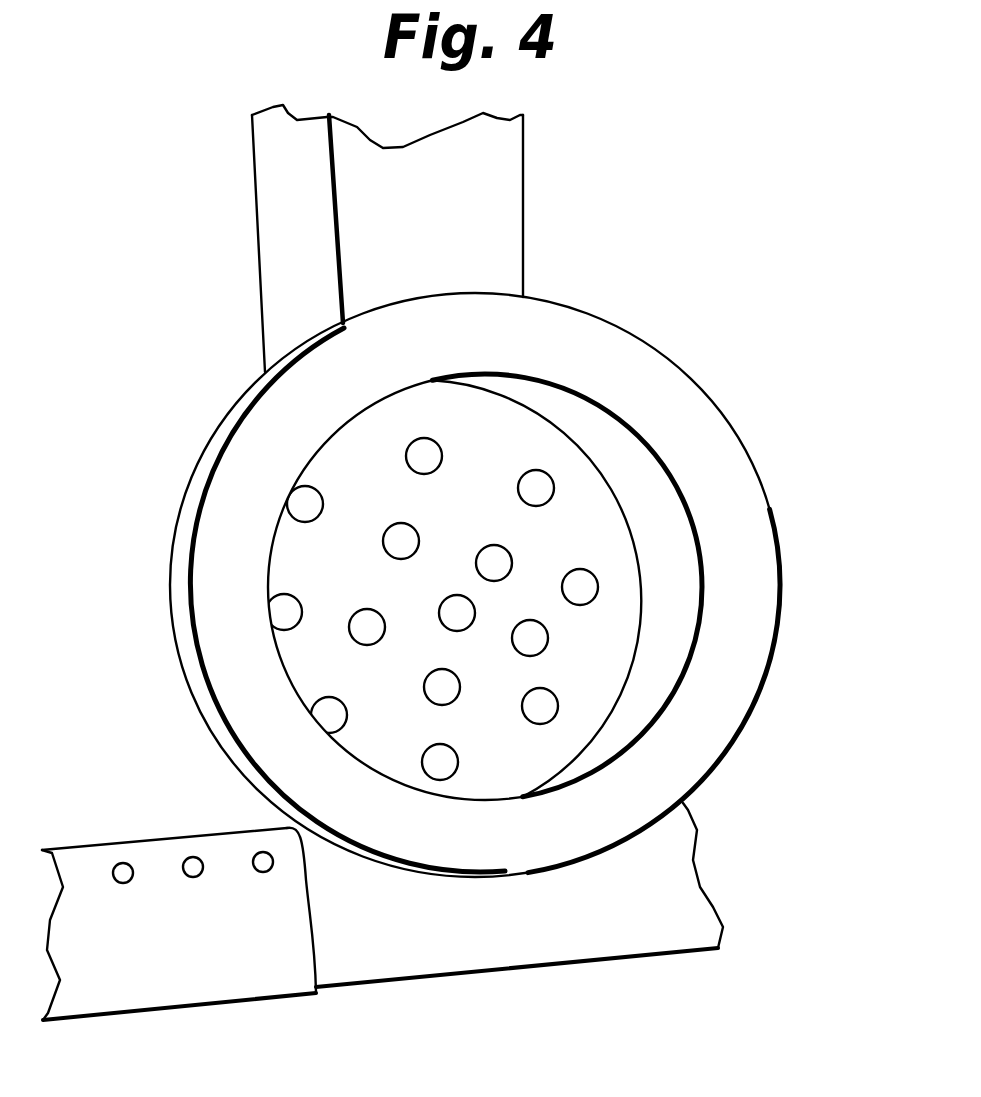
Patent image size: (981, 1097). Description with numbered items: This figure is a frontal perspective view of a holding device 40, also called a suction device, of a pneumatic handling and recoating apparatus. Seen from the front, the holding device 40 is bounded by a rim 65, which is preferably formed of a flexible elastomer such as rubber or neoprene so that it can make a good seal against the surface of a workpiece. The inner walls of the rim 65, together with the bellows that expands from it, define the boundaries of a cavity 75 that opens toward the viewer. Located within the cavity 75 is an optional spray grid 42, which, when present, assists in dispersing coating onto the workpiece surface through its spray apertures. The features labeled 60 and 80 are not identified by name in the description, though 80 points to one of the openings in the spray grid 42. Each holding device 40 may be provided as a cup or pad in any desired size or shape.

The holding device 40 is at (224, 368).
The spray grid 42 is at (557, 587).
The housing 60 is at (173, 522).
The rim 65 is at (747, 537).
The cavity 75 is at (508, 538).
The aperture 80 is at (219, 650).